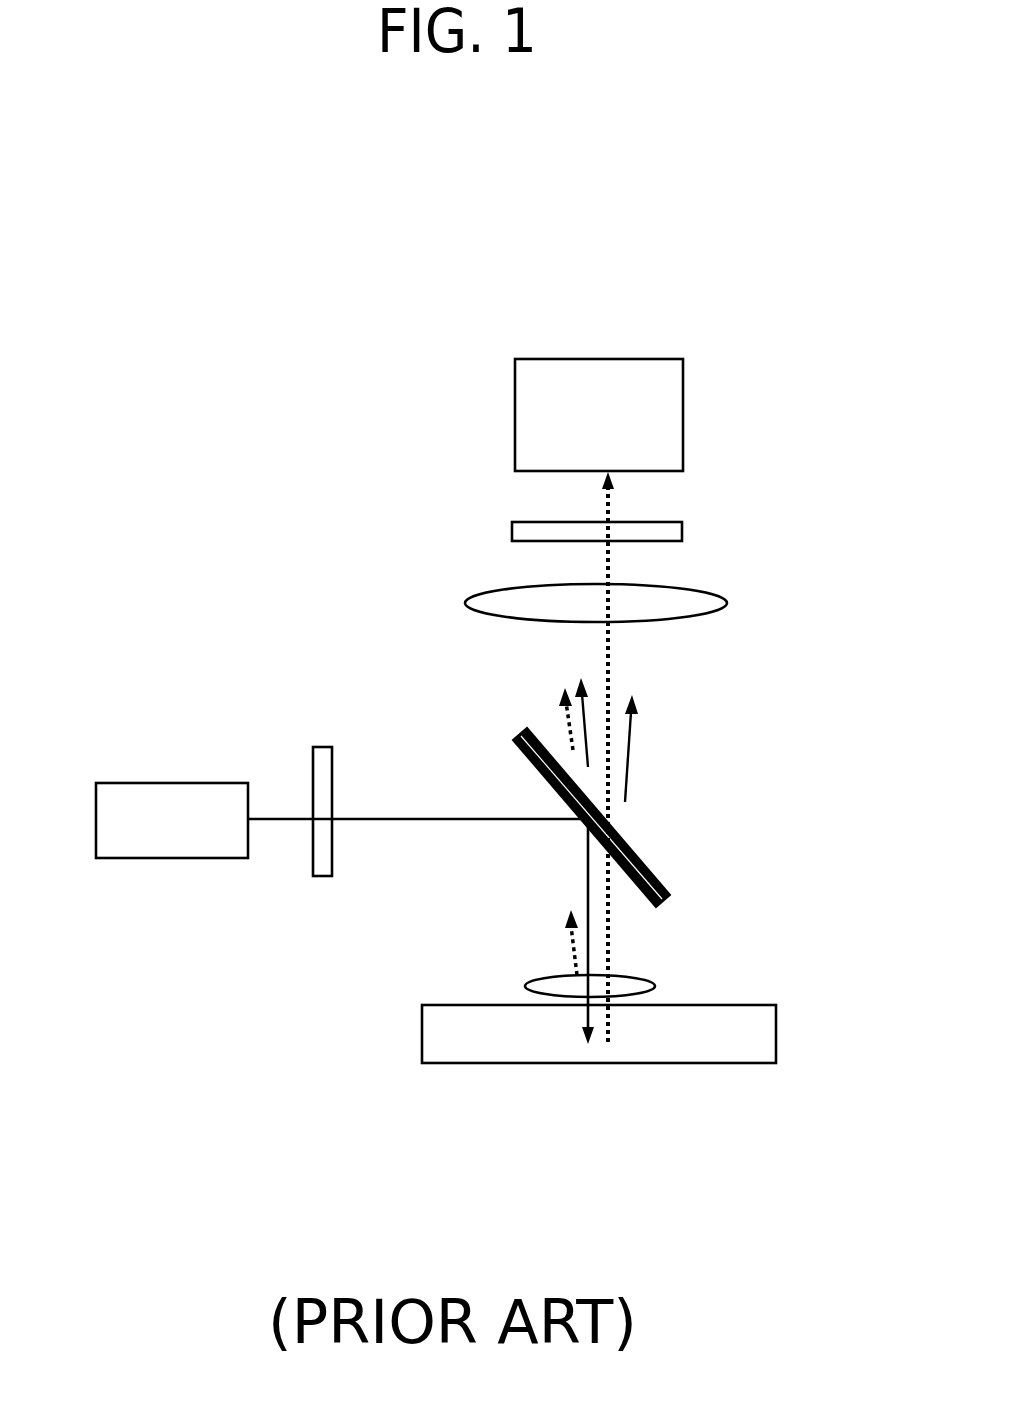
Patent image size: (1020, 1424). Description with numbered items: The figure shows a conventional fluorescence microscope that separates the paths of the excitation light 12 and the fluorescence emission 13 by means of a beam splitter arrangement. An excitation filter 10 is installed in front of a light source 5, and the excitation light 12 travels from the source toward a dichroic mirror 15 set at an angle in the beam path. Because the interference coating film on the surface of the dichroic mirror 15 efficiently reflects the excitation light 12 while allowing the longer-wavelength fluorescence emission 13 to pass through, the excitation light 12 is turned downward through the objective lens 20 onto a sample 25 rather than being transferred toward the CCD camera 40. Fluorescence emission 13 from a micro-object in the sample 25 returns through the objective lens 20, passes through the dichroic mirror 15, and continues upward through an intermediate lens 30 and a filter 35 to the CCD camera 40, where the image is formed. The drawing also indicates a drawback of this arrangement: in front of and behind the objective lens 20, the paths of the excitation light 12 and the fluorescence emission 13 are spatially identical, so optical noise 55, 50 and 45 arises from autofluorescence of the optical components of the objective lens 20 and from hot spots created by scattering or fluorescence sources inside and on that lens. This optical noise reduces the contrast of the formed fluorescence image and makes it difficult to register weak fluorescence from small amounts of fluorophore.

The light source 5 is at (188, 788).
The excitation filter 10 is at (317, 862).
The excitation light 12 is at (402, 817).
The fluorescence emission 13 is at (610, 658).
The dichroic mirror 15 is at (650, 867).
The objective lens 20 is at (570, 988).
The sample 25 is at (687, 1017).
The collection lens 30 is at (510, 595).
The emission filter 35 is at (653, 518).
The CCD camera 40 is at (672, 423).
The optical noise 45 is at (633, 748).
The optical noise 50 is at (560, 725).
The optical noise 55 is at (557, 940).